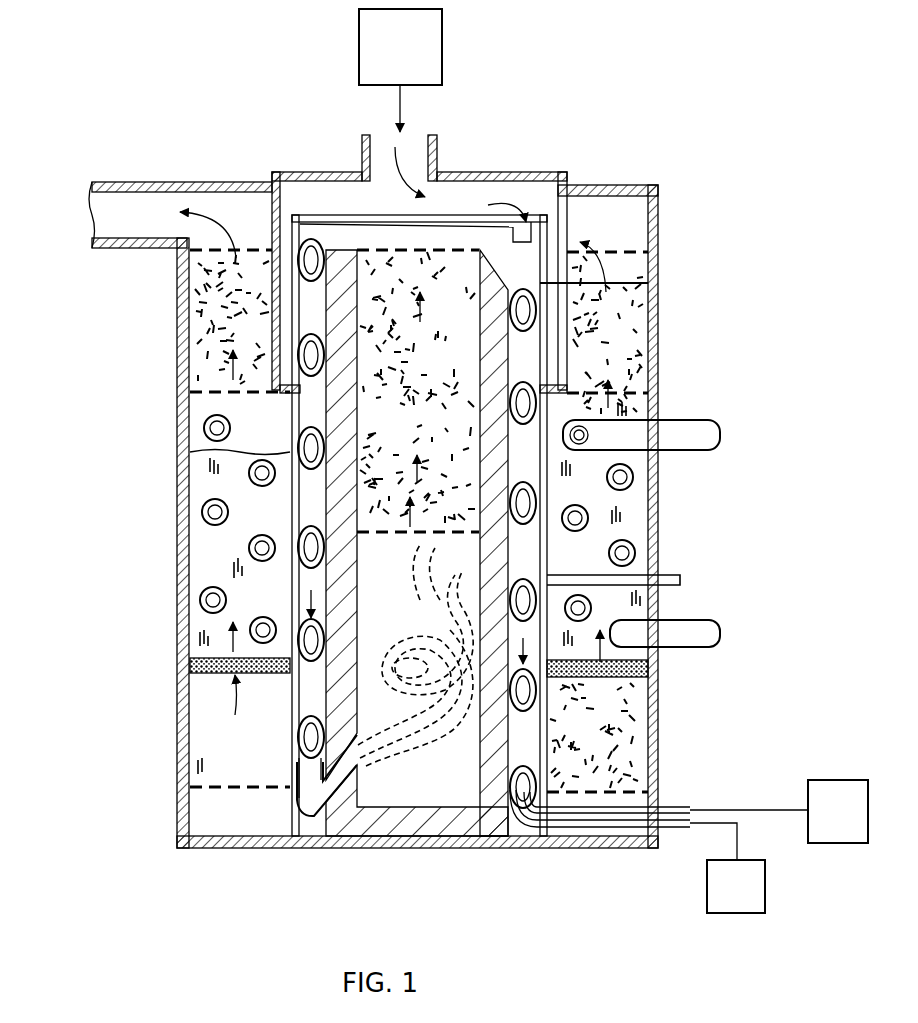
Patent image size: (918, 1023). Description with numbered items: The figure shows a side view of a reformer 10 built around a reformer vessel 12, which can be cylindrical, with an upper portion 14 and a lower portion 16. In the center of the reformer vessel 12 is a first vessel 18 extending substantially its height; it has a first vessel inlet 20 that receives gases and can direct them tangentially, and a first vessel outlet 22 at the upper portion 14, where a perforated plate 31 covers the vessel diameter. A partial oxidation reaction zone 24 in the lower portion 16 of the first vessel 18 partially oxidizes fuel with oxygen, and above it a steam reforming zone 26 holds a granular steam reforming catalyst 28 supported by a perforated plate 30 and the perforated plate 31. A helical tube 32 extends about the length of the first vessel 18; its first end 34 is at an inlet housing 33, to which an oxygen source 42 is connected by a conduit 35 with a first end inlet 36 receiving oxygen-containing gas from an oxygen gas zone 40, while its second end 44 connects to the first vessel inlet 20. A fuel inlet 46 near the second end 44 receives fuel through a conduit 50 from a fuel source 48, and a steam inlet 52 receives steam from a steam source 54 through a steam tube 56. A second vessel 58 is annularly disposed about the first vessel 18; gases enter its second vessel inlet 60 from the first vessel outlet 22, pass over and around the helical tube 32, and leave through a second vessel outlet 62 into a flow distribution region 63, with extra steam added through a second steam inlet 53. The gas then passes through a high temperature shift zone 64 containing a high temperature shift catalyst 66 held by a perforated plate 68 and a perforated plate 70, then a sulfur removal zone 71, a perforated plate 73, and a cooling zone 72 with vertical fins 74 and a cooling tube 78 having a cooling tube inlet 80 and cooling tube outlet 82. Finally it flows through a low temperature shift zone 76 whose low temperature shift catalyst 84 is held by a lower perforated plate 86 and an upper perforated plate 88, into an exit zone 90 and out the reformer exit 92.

The reformer 10 is at (140, 86).
The reformer vessel 12 is at (176, 728).
The upper portion 14 is at (592, 185).
The lower portion 16 is at (180, 848).
The first vessel 18 is at (300, 412).
The first vessel inlet 20 is at (372, 760).
The first vessel outlet 22 is at (377, 255).
The partial oxidation reaction zone 24 is at (462, 792).
The steam reforming zone 26 is at (420, 236).
The steam reforming catalyst 28 is at (388, 470).
The perforated plate 30 is at (445, 540).
The perforated plate 31 is at (455, 265).
The helical tube 32 is at (648, 285).
The inlet housing 33 is at (365, 134).
The first end 34 is at (538, 240).
The conduit 35 is at (402, 101).
The first end inlet 36 is at (524, 225).
The oxygen gas zone 40 is at (495, 200).
The oxygen source 42 is at (385, 60).
The second end 44 is at (312, 822).
The fuel inlet 46 is at (532, 815).
The fuel source 48 is at (823, 827).
The conduit 50 is at (680, 806).
The steam inlet 52 is at (525, 810).
The second steam inlet 53 is at (668, 577).
The steam source 54 is at (721, 902).
The steam tube 56 is at (687, 826).
The second vessel 58 is at (190, 452).
The second vessel inlet 60 is at (300, 238).
The second vessel outlet 62 is at (300, 792).
The flow distribution region 63 is at (228, 815).
The high temperature shift zone 64 is at (658, 750).
The high temperature shift catalyst 66 is at (640, 708).
The perforated plate 68 is at (220, 800).
The perforated plate 70 is at (658, 669).
The sulfur removal zone 71 is at (190, 662).
The cooling zone 72 is at (190, 515).
The perforated plate 73 is at (190, 628).
The vertical fins 74 is at (200, 556).
The low temperature shift zone 76 is at (178, 290).
The cooling tube 78 is at (635, 478).
The cooling tube inlet 80 is at (696, 622).
The cooling tube outlet 82 is at (700, 422).
The low temperature shift catalyst 84 is at (224, 322).
The lower perforated plate 86 is at (618, 392).
The upper perforated plate 88 is at (648, 233).
The exit zone 90 is at (212, 205).
The reformer exit 92 is at (92, 196).